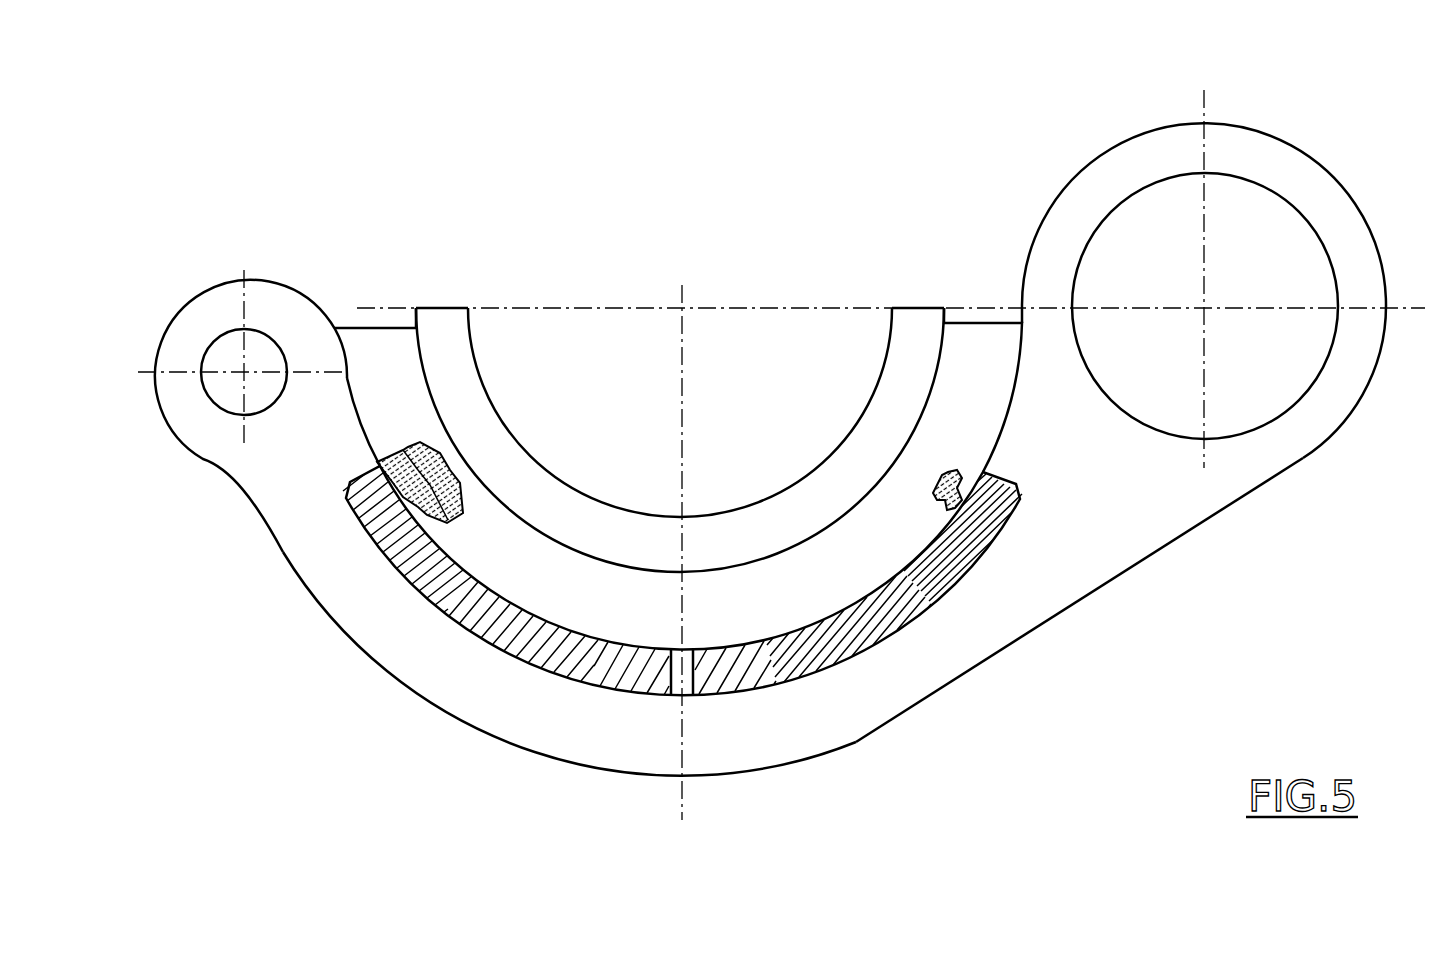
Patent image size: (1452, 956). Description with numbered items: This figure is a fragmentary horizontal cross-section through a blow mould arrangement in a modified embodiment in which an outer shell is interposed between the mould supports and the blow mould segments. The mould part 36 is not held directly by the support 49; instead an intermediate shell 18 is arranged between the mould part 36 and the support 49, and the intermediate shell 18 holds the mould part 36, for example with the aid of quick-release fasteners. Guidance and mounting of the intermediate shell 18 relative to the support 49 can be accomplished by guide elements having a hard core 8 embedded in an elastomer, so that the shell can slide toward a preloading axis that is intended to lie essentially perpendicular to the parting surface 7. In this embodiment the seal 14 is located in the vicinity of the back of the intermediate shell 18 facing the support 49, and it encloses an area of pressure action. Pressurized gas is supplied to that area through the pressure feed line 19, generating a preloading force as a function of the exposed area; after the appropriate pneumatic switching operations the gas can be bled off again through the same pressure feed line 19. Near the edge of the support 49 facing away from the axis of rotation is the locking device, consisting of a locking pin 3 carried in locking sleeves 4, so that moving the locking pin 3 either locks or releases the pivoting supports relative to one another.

The locking pin 3 is at (253, 353).
The locking sleeve 4 is at (172, 333).
The parting surface 7 is at (772, 308).
The core 8 is at (1213, 300).
The seal 14 is at (957, 500).
The intermediate shell 18 is at (972, 323).
The pressure feed line 19 is at (690, 697).
The mould part 36 is at (908, 308).
The support 49 is at (1182, 508).